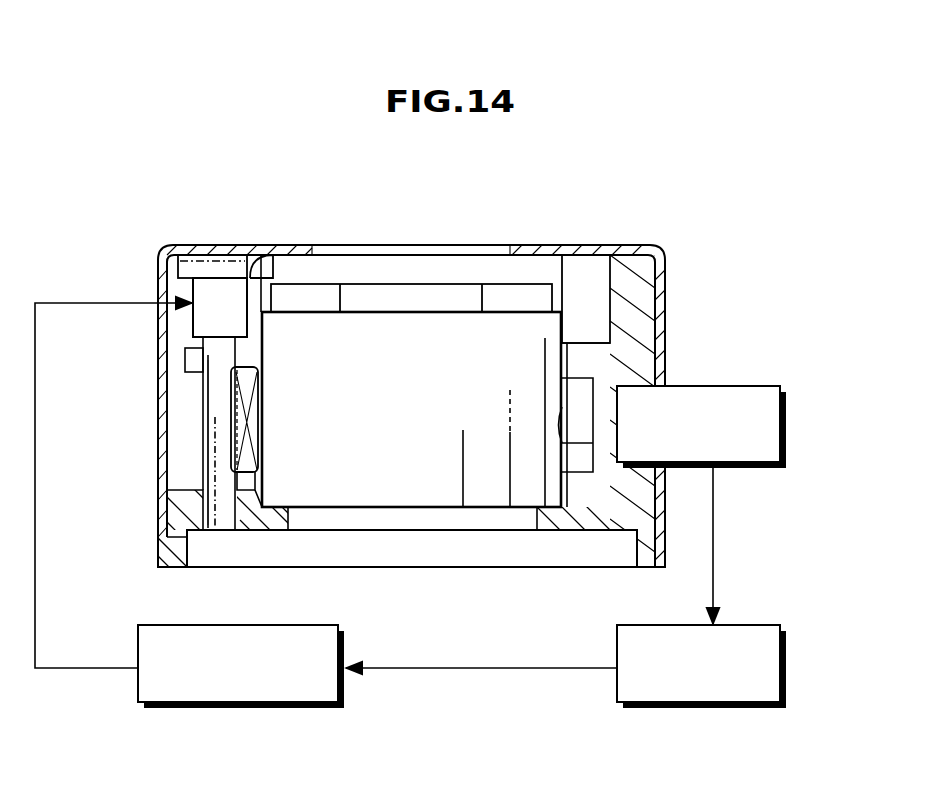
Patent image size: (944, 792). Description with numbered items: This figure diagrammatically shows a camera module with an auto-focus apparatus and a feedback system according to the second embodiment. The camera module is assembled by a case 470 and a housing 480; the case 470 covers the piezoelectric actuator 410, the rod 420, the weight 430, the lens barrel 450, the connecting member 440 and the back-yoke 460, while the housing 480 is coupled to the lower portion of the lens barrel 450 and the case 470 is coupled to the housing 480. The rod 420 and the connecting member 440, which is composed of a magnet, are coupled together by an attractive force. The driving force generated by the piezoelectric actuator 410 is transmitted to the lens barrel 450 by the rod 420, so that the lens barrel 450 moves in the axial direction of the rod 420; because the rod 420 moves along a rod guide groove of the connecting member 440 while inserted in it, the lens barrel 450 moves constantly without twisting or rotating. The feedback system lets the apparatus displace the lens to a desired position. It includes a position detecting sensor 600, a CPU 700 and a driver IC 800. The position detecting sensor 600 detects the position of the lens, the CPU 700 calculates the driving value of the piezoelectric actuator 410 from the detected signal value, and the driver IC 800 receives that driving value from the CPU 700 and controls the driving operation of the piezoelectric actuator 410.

The piezoelectric actuator 410 is at (210, 318).
The rod 420 is at (212, 412).
The weight 430 is at (217, 268).
The connecting member 440 is at (238, 430).
The lens barrel 450 is at (419, 295).
The back-yoke 460 is at (258, 386).
The case 470 is at (593, 253).
The housing 480 is at (475, 552).
The position detecting sensor 600 is at (787, 426).
The CPU 700 is at (705, 708).
The driver IC 800 is at (240, 708).